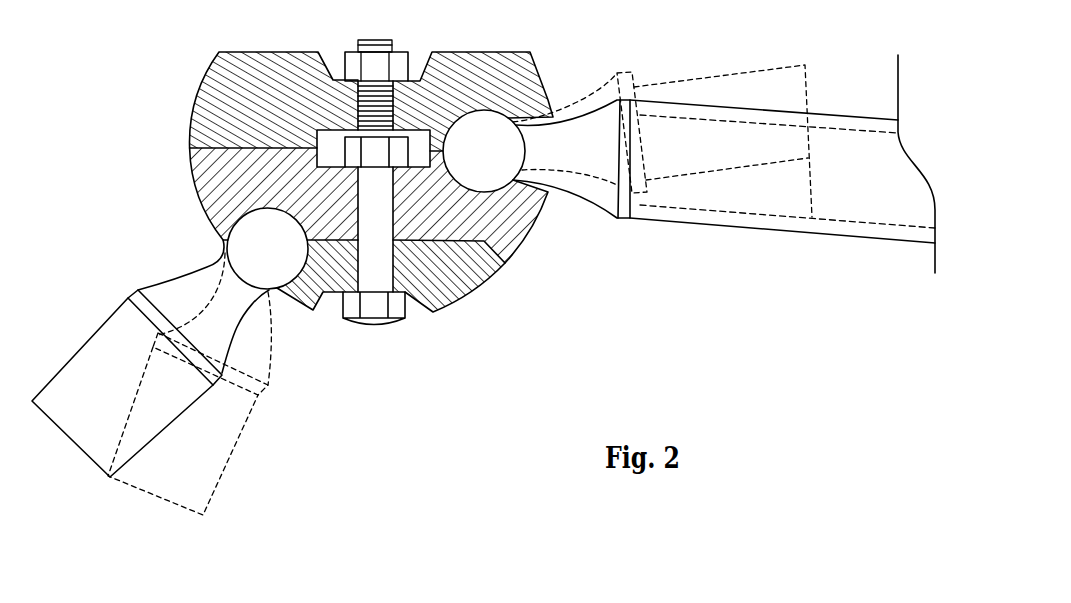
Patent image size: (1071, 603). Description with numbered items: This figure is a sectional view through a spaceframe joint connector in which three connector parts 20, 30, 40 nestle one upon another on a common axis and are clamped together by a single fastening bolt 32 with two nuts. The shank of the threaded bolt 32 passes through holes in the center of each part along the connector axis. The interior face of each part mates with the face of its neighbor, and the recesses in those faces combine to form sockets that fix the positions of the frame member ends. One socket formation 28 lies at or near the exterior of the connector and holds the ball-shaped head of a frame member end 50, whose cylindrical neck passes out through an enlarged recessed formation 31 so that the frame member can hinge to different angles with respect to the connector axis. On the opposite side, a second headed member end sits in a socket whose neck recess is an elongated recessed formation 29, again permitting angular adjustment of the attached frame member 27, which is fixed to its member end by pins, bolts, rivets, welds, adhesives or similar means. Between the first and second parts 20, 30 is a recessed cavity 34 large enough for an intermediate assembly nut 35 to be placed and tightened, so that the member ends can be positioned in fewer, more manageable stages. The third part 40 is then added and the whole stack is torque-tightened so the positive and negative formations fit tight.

The first connector part 20 is at (194, 92).
The frame member 27 is at (833, 231).
The socket formation 28 is at (270, 245).
The elongated recessed formation 29 is at (553, 118).
The second connector part 30 is at (194, 204).
The enlarged recessed formation 31 is at (273, 298).
The threaded bolt 32 is at (372, 299).
The recessed cavity 34 is at (418, 145).
The intermediate assembly nut 35 is at (376, 152).
The third connector part 40 is at (493, 286).
The frame member end 50 is at (150, 281).